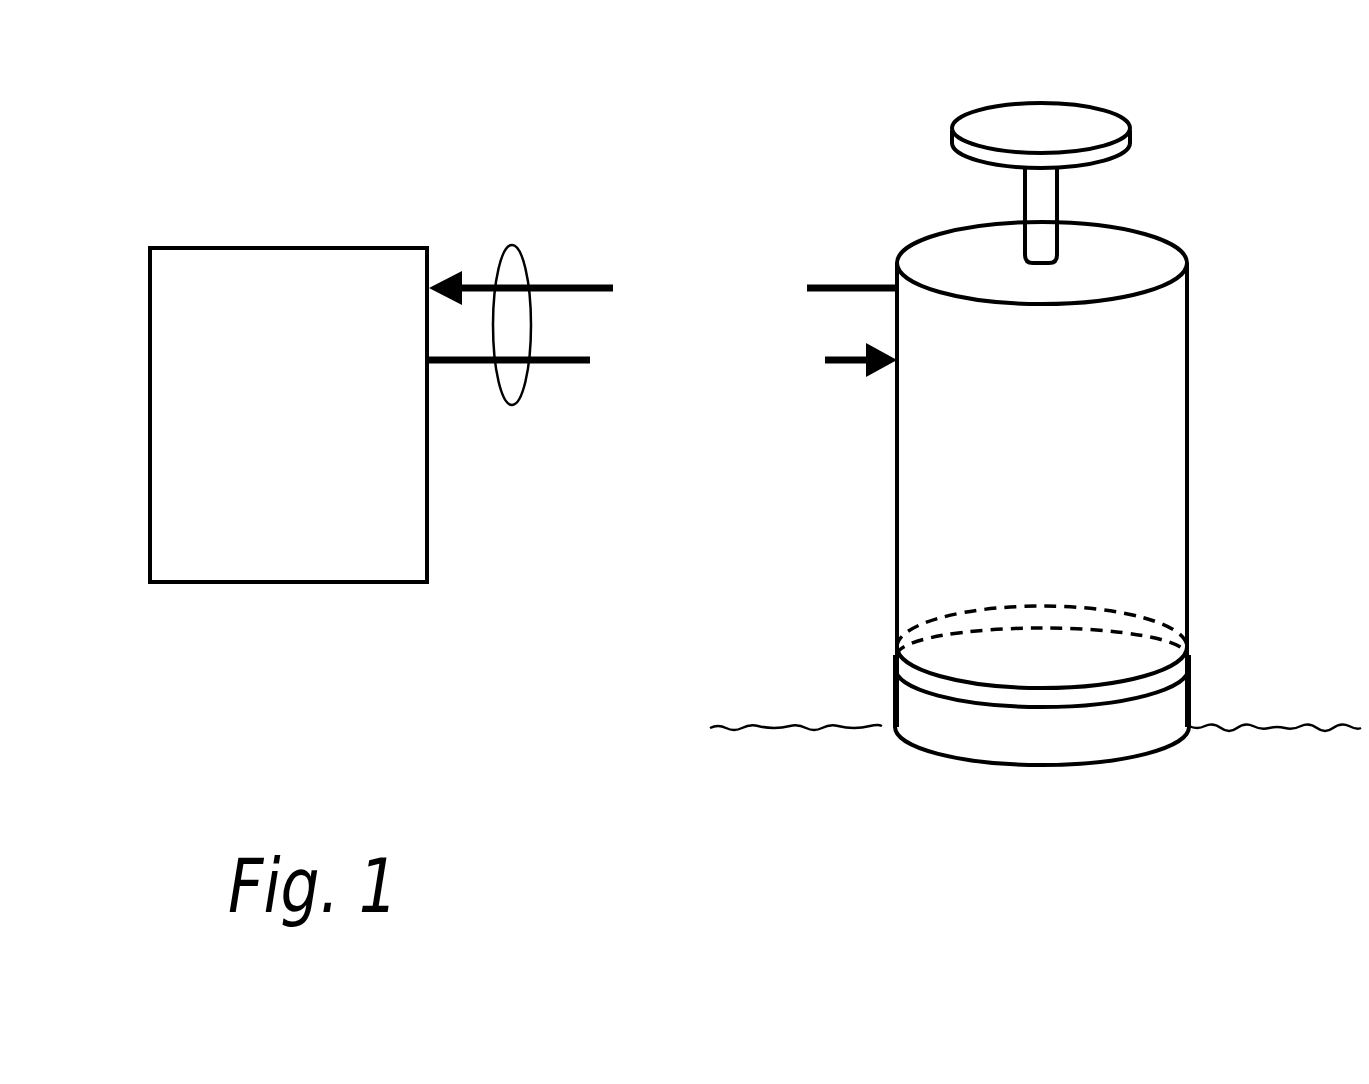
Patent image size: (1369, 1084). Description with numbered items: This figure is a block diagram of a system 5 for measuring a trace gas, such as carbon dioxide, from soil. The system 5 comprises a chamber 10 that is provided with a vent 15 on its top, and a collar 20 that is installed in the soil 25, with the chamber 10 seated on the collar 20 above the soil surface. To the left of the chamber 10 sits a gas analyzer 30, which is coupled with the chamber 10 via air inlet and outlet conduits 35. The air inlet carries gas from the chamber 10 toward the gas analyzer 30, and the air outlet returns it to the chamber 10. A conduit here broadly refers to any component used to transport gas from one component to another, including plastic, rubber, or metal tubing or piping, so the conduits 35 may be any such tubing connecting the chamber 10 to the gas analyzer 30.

The system 5 is at (178, 716).
The chamber 10 is at (1187, 430).
The vent 15 is at (1128, 126).
The collar 20 is at (1189, 683).
The soil 25 is at (1210, 920).
The gas analyzer 30 is at (150, 337).
The air inlet and outlet conduits 35 is at (519, 248).